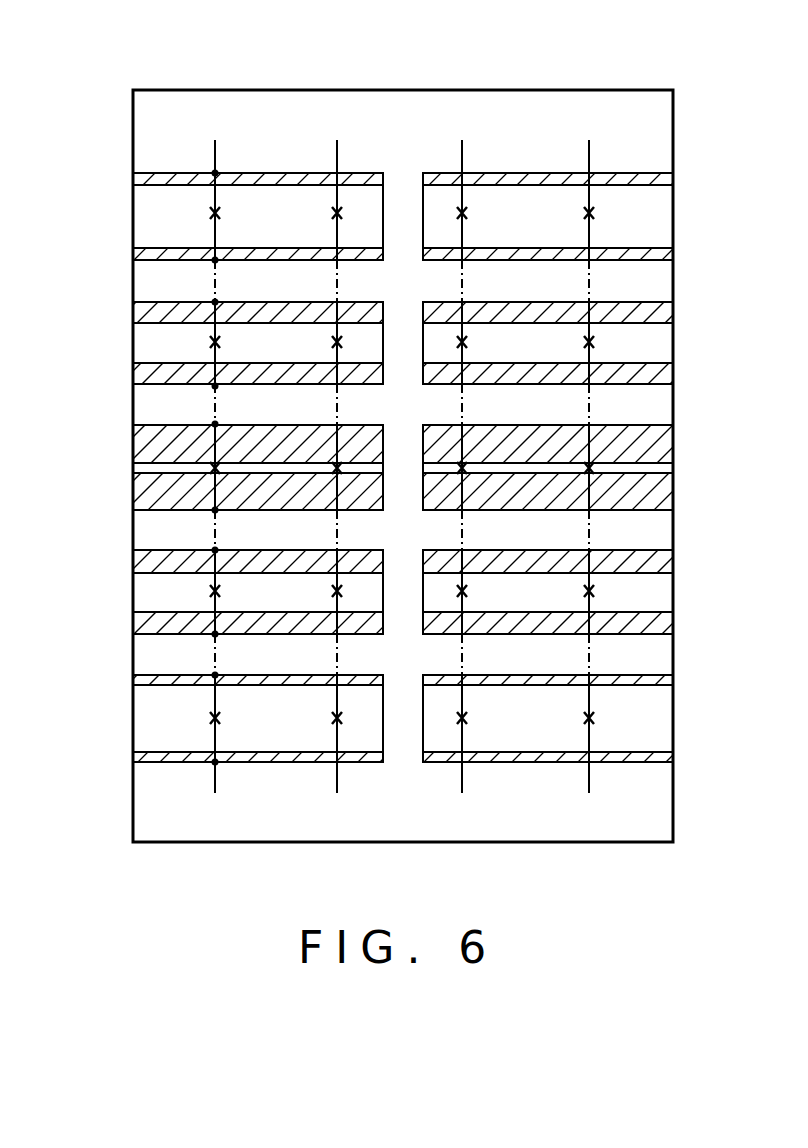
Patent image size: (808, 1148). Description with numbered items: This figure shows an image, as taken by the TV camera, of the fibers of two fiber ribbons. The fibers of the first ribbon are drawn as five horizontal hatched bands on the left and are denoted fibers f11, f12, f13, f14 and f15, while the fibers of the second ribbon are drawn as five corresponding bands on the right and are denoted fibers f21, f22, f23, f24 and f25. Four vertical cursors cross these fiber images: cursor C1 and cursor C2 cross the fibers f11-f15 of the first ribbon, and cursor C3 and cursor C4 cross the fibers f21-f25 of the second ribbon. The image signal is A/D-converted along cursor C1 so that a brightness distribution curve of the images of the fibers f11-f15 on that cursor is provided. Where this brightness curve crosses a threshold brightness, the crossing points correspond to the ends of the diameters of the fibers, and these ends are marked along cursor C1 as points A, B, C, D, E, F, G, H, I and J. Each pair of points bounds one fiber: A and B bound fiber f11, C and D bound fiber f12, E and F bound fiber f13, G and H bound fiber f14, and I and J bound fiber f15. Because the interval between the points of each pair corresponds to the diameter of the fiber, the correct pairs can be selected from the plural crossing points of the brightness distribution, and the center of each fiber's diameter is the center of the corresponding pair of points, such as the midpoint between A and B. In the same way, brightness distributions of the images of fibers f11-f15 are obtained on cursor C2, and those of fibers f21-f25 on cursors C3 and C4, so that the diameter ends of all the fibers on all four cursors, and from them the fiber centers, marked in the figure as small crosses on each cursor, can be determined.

The fiber f11 is at (133, 213).
The fiber f12 is at (133, 343).
The fiber f13 is at (133, 470).
The fiber f14 is at (133, 594).
The fiber f15 is at (133, 719).
The fiber f21 is at (673, 210).
The fiber f22 is at (673, 343).
The fiber f23 is at (673, 470).
The fiber f24 is at (673, 595).
The fiber f25 is at (673, 719).
The cursor C1 is at (212, 454).
The cursor C2 is at (336, 454).
The cursor C3 is at (461, 454).
The cursor C4 is at (589, 454).
The diameter end A is at (215, 172).
The diameter end B is at (215, 261).
The diameter end C is at (215, 301).
The diameter end D is at (215, 387).
The diameter end E is at (215, 423).
The diameter end F is at (215, 511).
The diameter end G is at (215, 549).
The diameter end H is at (215, 635).
The diameter end I is at (215, 674).
The diameter end J is at (215, 763).